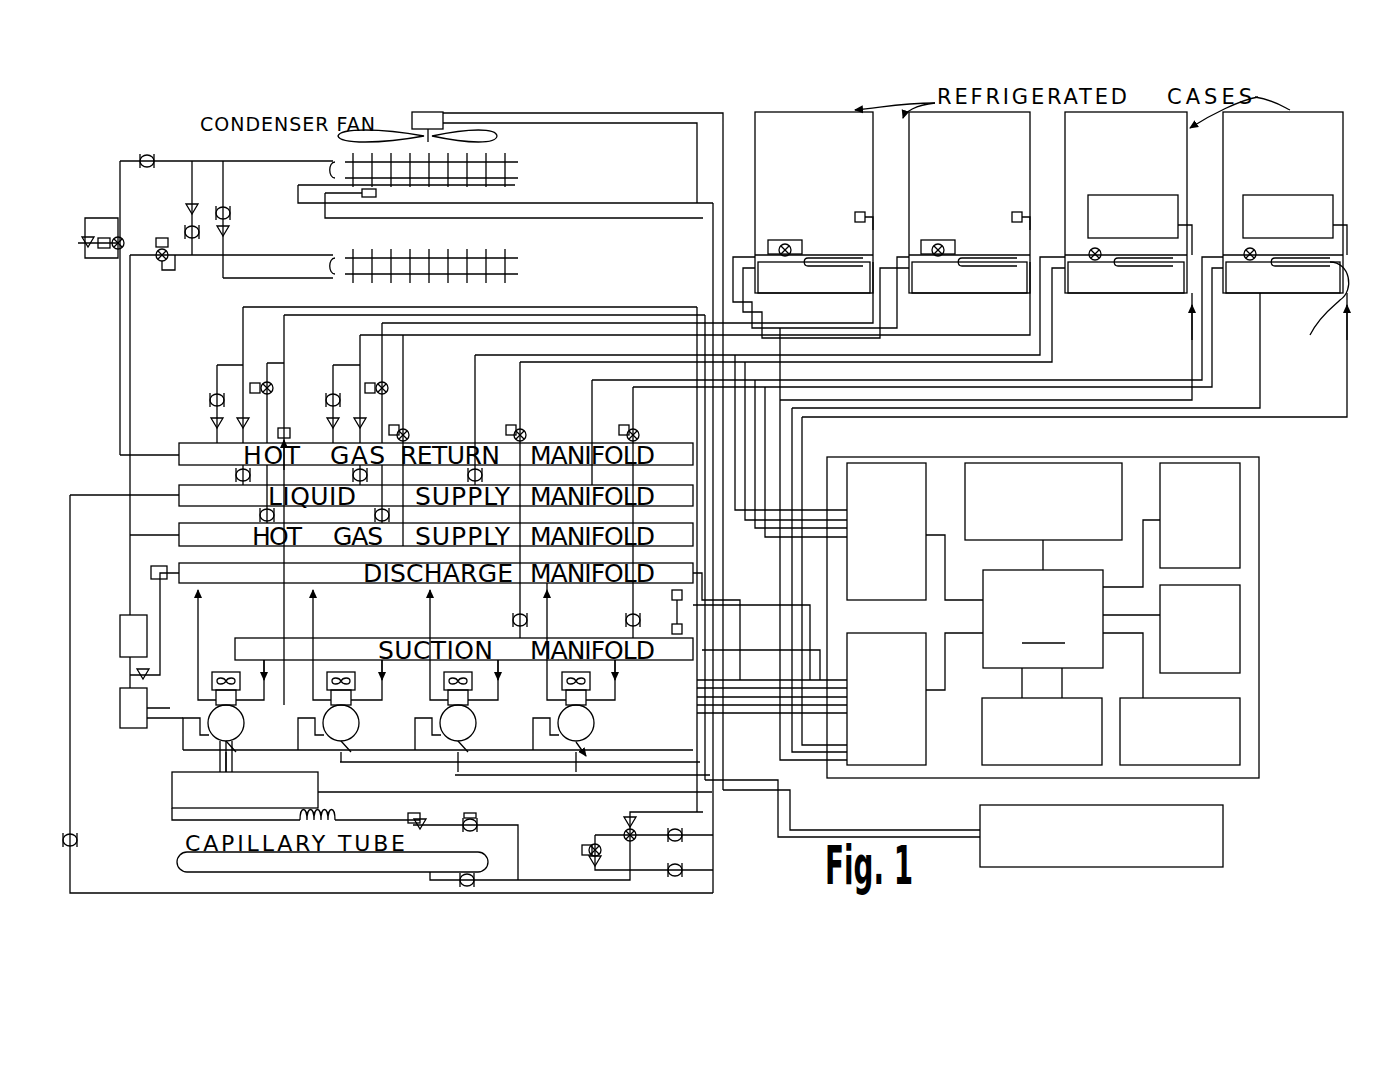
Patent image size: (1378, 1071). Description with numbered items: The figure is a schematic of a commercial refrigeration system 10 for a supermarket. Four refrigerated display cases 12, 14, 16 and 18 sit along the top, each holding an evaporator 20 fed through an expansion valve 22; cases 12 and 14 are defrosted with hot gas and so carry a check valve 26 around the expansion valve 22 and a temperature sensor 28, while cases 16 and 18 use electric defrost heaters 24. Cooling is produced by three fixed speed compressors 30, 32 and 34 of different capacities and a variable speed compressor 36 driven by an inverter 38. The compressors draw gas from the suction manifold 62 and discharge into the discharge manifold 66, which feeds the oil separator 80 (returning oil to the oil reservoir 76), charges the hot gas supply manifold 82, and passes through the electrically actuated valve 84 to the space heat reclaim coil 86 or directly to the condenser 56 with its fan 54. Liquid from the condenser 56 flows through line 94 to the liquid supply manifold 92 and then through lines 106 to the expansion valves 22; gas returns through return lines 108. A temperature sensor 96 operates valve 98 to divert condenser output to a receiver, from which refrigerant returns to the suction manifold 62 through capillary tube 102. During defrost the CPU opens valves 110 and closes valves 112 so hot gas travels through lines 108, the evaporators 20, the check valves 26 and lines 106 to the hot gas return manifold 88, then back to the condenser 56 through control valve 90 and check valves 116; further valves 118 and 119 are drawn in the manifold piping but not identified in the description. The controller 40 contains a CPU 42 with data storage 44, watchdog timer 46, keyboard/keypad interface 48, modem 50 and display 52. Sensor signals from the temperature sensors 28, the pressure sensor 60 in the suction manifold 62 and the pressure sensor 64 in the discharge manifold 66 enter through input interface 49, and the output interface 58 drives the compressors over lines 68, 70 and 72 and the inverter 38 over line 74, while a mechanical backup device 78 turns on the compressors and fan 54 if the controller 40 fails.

The commercial refrigeration system 10 is at (1290, 110).
The refrigerated display case 12 is at (815, 120).
The refrigerated display case 14 is at (1030, 132).
The refrigerated display case 16 is at (1187, 165).
The refrigerated display case 18 is at (1308, 112).
The evaporator 20 is at (815, 258).
The expansion valve 22 is at (782, 244).
The defrost heater 24 is at (1150, 195).
The check valve 26 is at (780, 246).
The temperature sensor 28 is at (860, 212).
The fixed speed compressor 30 is at (576, 723).
The fixed speed compressor 32 is at (458, 723).
The fixed speed compressor 34 is at (341, 723).
The variable speed compressor 36 is at (226, 723).
The inverter 38 is at (176, 820).
The controller 40 is at (1270, 482).
The central processing unit (CPU) 42 is at (1071, 609).
The memory data storage unit 44 is at (1232, 727).
The watchdog timer 46 is at (1092, 758).
The keyboard/keypad interface 48 is at (1122, 472).
The input interface 49 is at (880, 470).
The modem 50 is at (1230, 605).
The display 52 is at (1226, 472).
The condenser fan 54 is at (443, 114).
The condenser 56 is at (348, 162).
The output interface 58 is at (915, 758).
The pressure sensor 60 is at (672, 629).
The suction manifold 62 is at (557, 632).
The pressure sensor 64 is at (695, 608).
The discharge manifold 66 is at (628, 585).
The line 68 is at (590, 750).
The line 70 is at (455, 765).
The line 72 is at (345, 776).
The line 74 is at (498, 793).
The oil reservoir 76 is at (133, 716).
The mechanical backup device 78 is at (1212, 846).
The oil separator 80 is at (140, 628).
The hot gas supply manifold 82 is at (318, 547).
The electrically actuated valve 84 is at (162, 248).
The space heat reclaim coil 86 is at (450, 258).
The hot gas return manifold 88 is at (432, 472).
The control valve 90 is at (97, 216).
The liquid supply manifold 92 is at (195, 487).
The line 94 is at (75, 808).
The temperature sensor 96 is at (365, 198).
The valve 98 is at (610, 828).
The capillary tube 102 is at (340, 812).
The line 106 is at (265, 348).
The return line 108 is at (462, 325).
The valve 110 is at (268, 382).
The valve 112 is at (288, 438).
The check valve 116 is at (212, 422).
The liquid line 118 is at (240, 400).
The check valve 119 is at (400, 400).